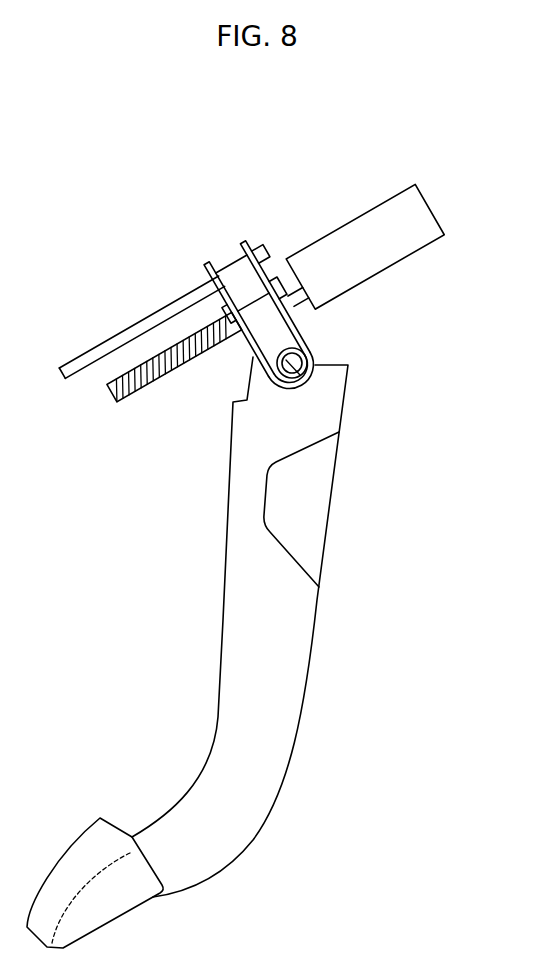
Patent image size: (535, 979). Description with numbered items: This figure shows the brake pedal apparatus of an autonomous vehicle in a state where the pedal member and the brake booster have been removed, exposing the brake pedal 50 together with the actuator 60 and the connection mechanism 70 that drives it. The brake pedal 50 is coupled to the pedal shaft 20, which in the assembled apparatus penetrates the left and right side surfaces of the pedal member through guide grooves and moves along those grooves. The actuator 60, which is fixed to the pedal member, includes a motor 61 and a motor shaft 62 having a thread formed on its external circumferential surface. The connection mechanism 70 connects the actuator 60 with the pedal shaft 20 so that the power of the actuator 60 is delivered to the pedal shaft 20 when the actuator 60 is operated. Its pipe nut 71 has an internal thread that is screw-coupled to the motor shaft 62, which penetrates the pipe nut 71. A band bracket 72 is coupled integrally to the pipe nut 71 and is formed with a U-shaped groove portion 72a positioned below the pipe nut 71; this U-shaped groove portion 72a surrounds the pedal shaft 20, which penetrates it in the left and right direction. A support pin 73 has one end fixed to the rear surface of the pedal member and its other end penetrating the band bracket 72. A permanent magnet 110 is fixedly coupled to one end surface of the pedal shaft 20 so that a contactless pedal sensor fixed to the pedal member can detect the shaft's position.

The pedal shaft 20 is at (313, 371).
The brake pedal 50 is at (228, 717).
The actuator 60 is at (403, 200).
The motor 61 is at (412, 215).
The motor shaft 62 is at (128, 397).
The connection mechanism 70 is at (112, 291).
The pipe nut 71 is at (260, 303).
The band bracket 72 is at (348, 303).
The U-shaped groove portion 72a is at (311, 346).
The support pin 73 is at (83, 358).
The permanent magnet 110 is at (300, 375).